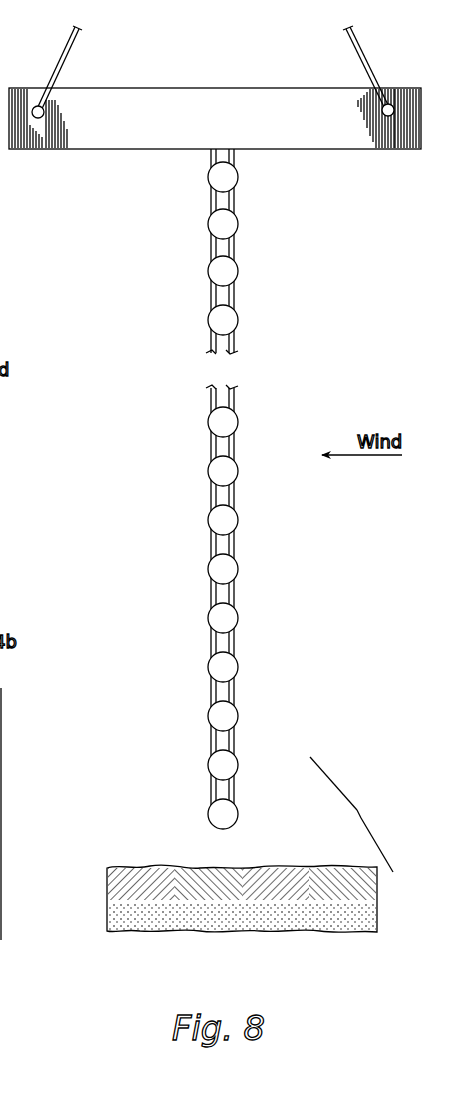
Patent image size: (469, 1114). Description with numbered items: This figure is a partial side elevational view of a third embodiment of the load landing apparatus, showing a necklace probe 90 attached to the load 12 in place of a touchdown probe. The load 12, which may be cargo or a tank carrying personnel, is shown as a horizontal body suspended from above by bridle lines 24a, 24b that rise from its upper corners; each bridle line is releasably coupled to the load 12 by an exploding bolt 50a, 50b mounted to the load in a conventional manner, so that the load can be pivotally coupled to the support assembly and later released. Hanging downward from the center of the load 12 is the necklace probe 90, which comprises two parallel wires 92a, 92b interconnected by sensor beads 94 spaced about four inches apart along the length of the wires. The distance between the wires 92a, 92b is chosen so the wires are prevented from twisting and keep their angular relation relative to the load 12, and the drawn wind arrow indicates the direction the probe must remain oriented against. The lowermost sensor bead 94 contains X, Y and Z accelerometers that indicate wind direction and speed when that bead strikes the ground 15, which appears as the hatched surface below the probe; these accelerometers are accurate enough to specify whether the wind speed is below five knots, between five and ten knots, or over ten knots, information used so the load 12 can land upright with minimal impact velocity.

The load 12 is at (25, 83).
The bridle line 24a is at (72, 50).
The bridle line 24b is at (362, 62).
The exploding bolt 50a is at (46, 110).
The exploding bolt 50b is at (380, 110).
The necklace probe 90 is at (240, 489).
The wire 92a is at (211, 447).
The wire 92b is at (234, 447).
The sensor bead 94 is at (238, 181).
The ground 15 is at (136, 860).